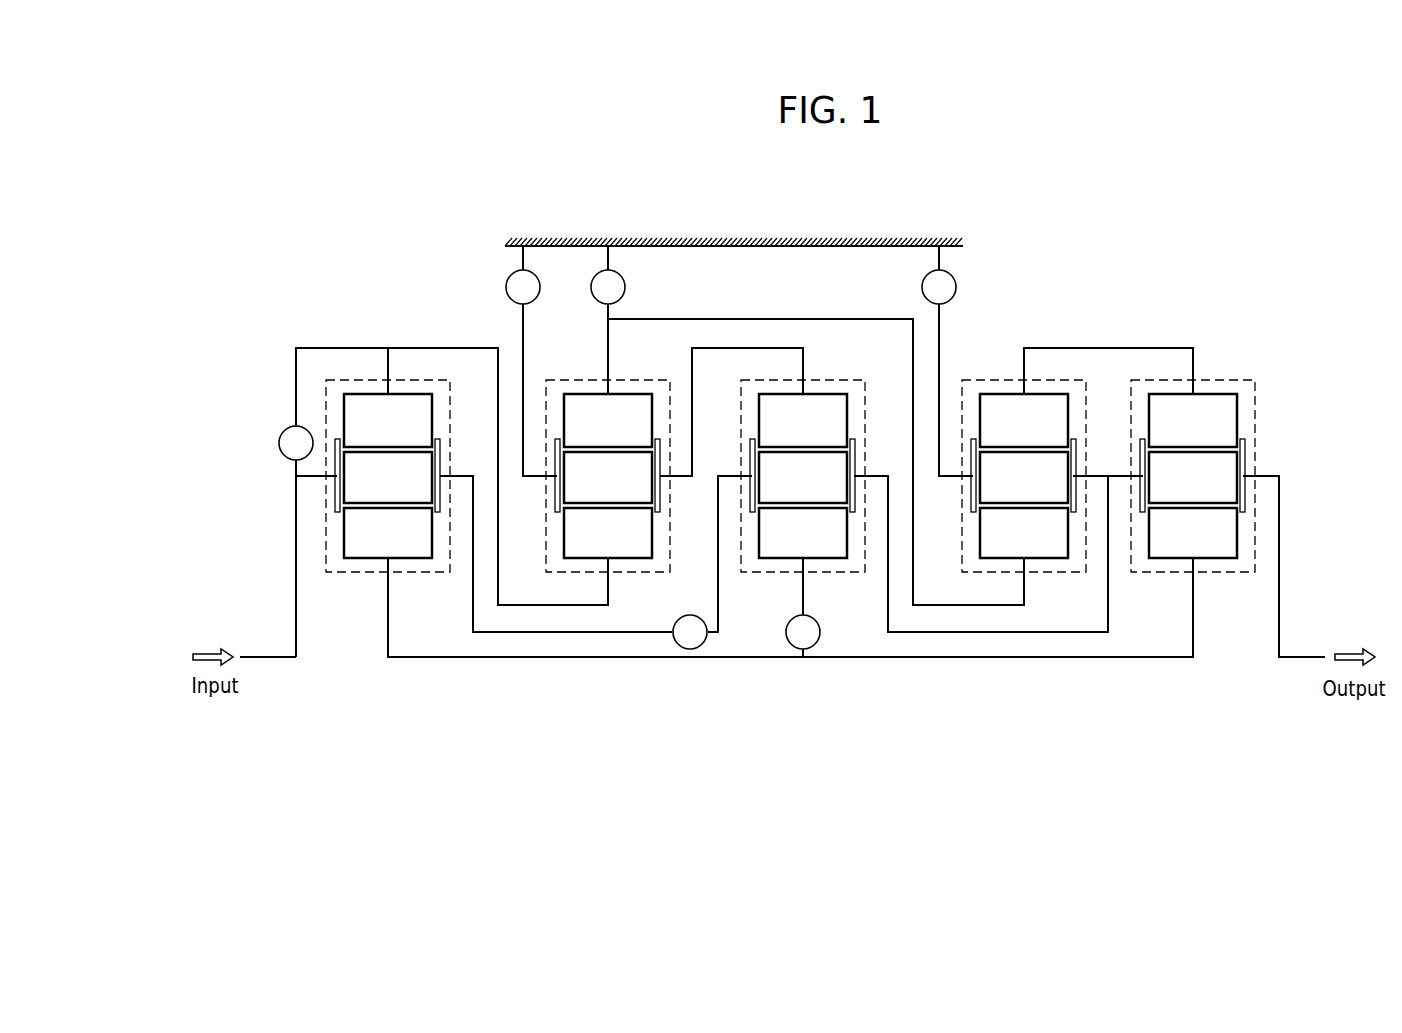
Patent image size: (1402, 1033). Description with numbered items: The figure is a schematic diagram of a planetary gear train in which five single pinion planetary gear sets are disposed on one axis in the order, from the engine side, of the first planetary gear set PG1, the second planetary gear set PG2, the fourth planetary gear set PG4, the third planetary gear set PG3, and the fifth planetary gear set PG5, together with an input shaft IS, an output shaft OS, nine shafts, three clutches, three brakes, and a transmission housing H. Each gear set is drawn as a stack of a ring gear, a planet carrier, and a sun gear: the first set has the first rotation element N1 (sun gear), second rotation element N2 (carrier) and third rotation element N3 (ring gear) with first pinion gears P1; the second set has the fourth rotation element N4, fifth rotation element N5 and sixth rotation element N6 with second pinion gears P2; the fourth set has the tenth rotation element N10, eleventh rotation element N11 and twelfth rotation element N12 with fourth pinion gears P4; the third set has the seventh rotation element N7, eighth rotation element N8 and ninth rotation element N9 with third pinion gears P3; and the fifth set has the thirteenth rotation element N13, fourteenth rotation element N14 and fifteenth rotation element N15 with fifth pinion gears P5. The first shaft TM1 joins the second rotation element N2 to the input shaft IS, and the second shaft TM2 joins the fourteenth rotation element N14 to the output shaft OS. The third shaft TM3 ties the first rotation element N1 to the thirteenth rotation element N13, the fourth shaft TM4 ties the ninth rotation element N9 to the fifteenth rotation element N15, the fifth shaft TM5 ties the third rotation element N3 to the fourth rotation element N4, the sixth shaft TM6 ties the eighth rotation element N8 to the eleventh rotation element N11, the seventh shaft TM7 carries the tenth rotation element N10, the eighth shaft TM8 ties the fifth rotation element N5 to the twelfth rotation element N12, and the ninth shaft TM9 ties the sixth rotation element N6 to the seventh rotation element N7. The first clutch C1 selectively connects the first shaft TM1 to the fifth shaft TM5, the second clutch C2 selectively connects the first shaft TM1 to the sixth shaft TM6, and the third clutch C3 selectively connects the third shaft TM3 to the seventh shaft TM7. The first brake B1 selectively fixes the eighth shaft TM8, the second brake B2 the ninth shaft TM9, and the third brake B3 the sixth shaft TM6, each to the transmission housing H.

The transmission housing H is at (788, 240).
The first brake B1 is at (531, 361).
The second brake B2 is at (608, 320).
The third brake B3 is at (947, 361).
The first clutch C1 is at (296, 443).
The second clutch C2 is at (690, 632).
The third clutch C3 is at (803, 632).
The input shaft IS is at (265, 660).
The output shaft OS is at (1293, 660).
The first shaft TM1 is at (299, 638).
The second shaft TM2 is at (1281, 605).
The third shaft TM3 is at (916, 660).
The fourth shaft TM4 is at (1111, 348).
The fifth shaft TM5 is at (344, 348).
The sixth shaft TM6 is at (1000, 635).
The seventh shaft TM7 is at (803, 592).
The eighth shaft TM8 is at (733, 348).
The ninth shaft TM9 is at (827, 319).
The first planetary gear set PG1 is at (420, 578).
The second planetary gear set PG2 is at (633, 578).
The third planetary gear set PG3 is at (1054, 578).
The fourth planetary gear set PG4 is at (848, 578).
The fifth planetary gear set PG5 is at (1229, 578).
The first rotation element N1 is at (388, 533).
The second rotation element N2 is at (334, 503).
The third rotation element N3 is at (388, 420).
The fourth rotation element N4 is at (608, 533).
The fifth rotation element N5 is at (555, 492).
The sixth rotation element N6 is at (608, 420).
The seventh rotation element N7 is at (1024, 533).
The eighth rotation element N8 is at (971, 492).
The ninth rotation element N9 is at (1024, 420).
The tenth rotation element N10 is at (803, 533).
The eleventh rotation element N11 is at (856, 459).
The twelfth rotation element N12 is at (803, 420).
The thirteenth rotation element N13 is at (1193, 533).
The fourteenth rotation element N14 is at (1246, 447).
The fifteenth rotation element N15 is at (1193, 420).
The first pinion gears P1 is at (392, 475).
The second pinion gears P2 is at (612, 475).
The third pinion gears P3 is at (1028, 475).
The fourth pinion gears P4 is at (798, 475).
The fifth pinion gears P5 is at (1188, 475).